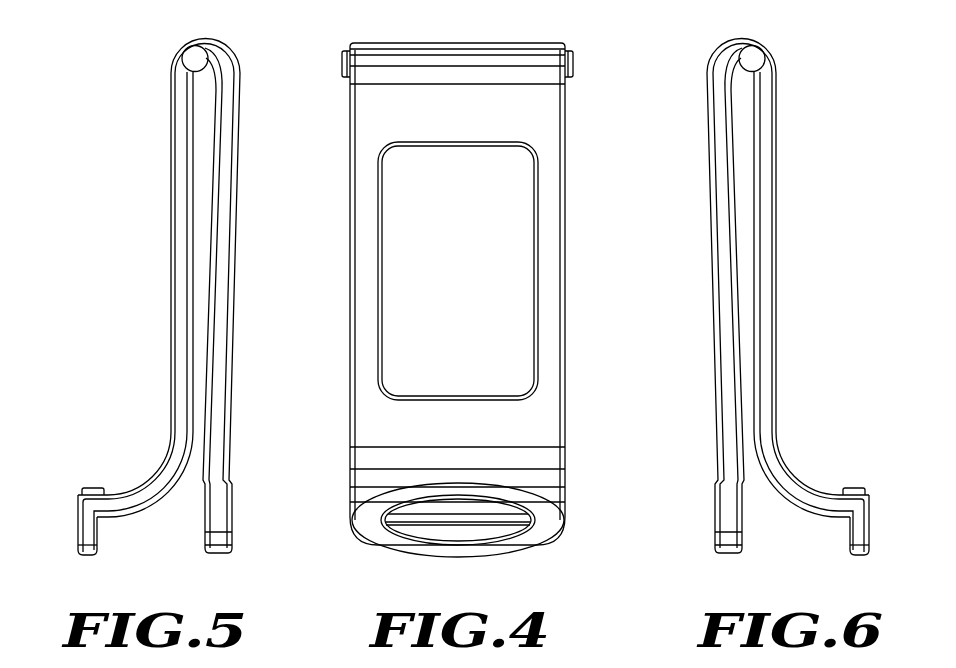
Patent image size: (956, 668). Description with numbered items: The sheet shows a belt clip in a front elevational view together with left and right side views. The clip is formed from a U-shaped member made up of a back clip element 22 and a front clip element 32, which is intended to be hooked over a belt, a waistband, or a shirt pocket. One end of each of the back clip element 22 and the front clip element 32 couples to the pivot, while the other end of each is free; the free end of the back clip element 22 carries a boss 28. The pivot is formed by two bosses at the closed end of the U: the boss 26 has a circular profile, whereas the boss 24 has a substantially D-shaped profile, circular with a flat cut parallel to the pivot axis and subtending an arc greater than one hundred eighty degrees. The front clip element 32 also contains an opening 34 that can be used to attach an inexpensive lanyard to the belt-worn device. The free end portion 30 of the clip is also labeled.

In FIG. 5, the back clip element 22 is at (170, 302).
In FIG. 6, the back clip element 22 is at (776, 285).
In FIG. 4, the boss 24 is at (574, 70).
In FIG. 6, the boss 24 is at (750, 60).
In FIG. 5, the boss 26 is at (193, 57).
In FIG. 4, the boss 26 is at (342, 62).
In FIG. 5, the boss 28 is at (95, 486).
In FIG. 6, the boss 28 is at (852, 486).
In FIG. 5, the foot portion 30 is at (78, 530).
In FIG. 6, the foot portion 30 is at (869, 530).
In FIG. 5, the front clip element 32 is at (228, 294).
In FIG. 4, the front clip element 32 is at (550, 313).
In FIG. 6, the front clip element 32 is at (712, 293).
In FIG. 5, the opening 34 is at (232, 527).
In FIG. 4, the opening 34 is at (463, 533).
In FIG. 6, the opening 34 is at (713, 524).